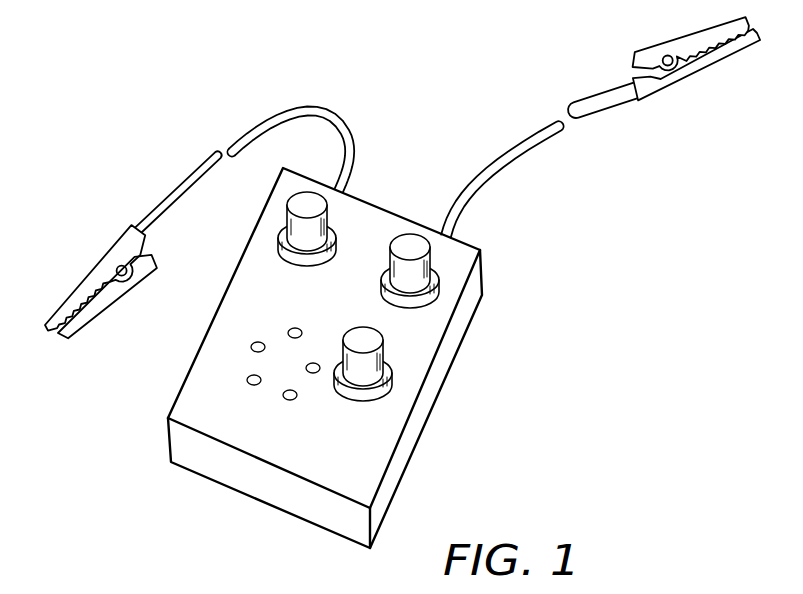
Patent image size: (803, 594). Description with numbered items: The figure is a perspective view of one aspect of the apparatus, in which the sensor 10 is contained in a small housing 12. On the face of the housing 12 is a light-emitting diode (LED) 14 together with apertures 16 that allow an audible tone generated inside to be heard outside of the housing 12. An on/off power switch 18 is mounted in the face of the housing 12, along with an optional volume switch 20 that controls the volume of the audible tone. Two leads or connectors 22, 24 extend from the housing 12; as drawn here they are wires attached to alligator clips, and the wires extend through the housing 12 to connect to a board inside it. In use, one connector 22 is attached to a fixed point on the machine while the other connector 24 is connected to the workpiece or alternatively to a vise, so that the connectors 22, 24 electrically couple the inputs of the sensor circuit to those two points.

The sensor 10 is at (590, 258).
The housing 12 is at (407, 453).
The light-emitting diode (LED) 14 is at (393, 372).
The apertures 16 is at (250, 345).
The on/off power switch 18 is at (292, 234).
The volume switch 20 is at (418, 278).
The connector 22 is at (85, 273).
The connector 24 is at (686, 84).